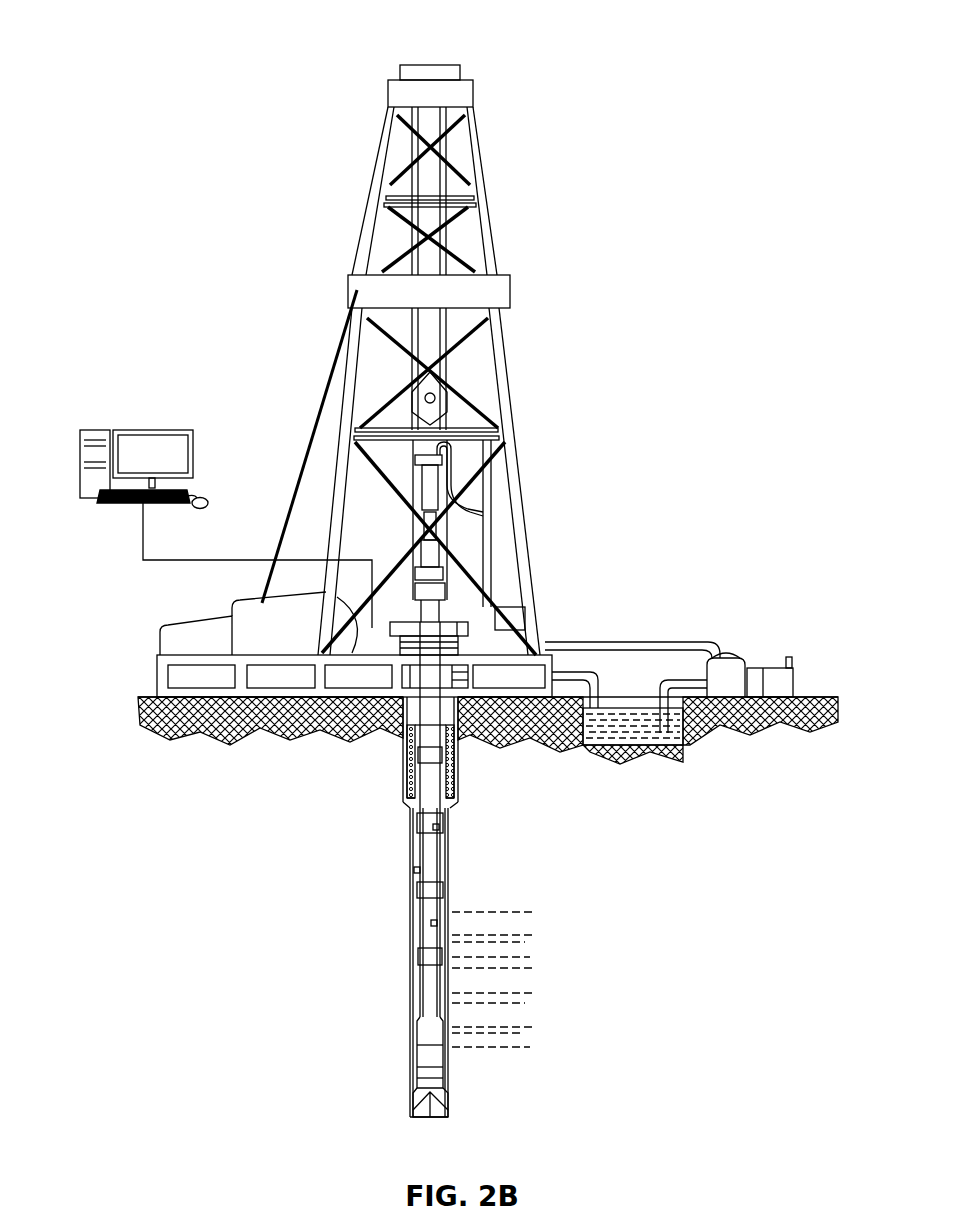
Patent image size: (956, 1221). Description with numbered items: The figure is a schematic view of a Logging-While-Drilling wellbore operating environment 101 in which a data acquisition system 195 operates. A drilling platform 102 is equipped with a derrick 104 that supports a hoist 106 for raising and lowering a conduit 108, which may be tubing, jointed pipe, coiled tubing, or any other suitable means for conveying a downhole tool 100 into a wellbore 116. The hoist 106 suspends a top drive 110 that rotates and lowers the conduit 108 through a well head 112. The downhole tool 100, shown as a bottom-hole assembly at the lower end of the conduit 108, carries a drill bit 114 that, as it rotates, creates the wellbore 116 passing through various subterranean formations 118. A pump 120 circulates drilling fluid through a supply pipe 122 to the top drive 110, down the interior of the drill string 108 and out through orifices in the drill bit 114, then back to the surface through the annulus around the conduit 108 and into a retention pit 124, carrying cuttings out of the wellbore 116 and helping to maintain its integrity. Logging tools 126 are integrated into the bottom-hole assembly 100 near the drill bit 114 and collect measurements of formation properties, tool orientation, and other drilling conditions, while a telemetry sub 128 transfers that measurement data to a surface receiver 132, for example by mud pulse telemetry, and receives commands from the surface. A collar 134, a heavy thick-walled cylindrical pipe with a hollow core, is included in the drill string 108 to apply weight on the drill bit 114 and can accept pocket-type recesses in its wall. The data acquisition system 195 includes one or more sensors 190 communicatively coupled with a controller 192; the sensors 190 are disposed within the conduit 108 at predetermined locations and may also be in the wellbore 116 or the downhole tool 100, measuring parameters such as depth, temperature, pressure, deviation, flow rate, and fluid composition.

The downhole tool 100 is at (452, 1068).
The Logging-While-Drilling wellbore operating environment 101 is at (278, 78).
The drilling platform 102 is at (157, 673).
The derrick 104 is at (484, 231).
The hoist 106 is at (450, 404).
The conduit 108 is at (441, 856).
The top drive 110 is at (432, 493).
The well head 112 is at (452, 618).
The drill bit 114 is at (449, 1104).
The wellbore 116 is at (448, 884).
The subterranean formations 118 is at (553, 910).
The pump 120 is at (733, 657).
The supply pipe 122 is at (622, 641).
The retention pit 124 is at (636, 746).
The logging tools 126 is at (419, 1057).
The telemetry sub 128 is at (419, 1032).
The surface receiver 132 is at (446, 573).
The collar 134 is at (419, 1066).
The sensors 190 is at (439, 827).
The controller 192 is at (135, 430).
The data acquisition system 195 is at (118, 386).